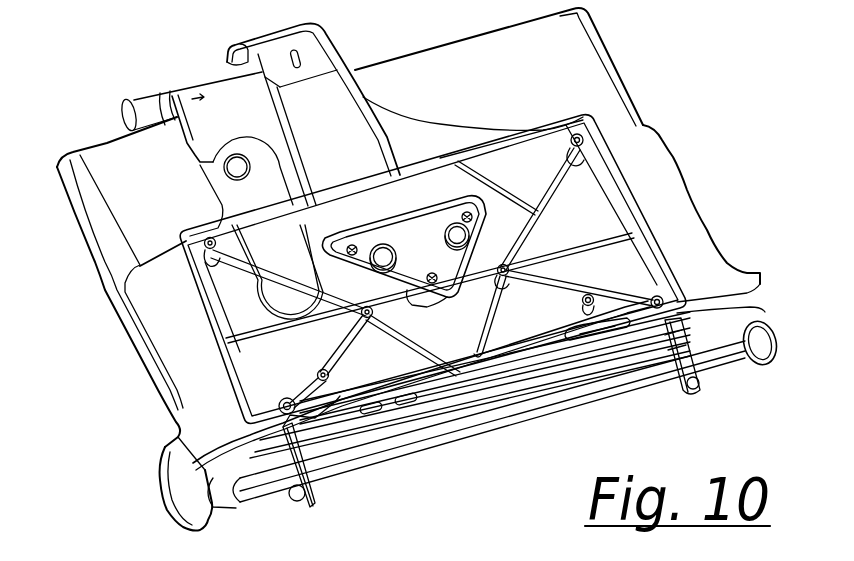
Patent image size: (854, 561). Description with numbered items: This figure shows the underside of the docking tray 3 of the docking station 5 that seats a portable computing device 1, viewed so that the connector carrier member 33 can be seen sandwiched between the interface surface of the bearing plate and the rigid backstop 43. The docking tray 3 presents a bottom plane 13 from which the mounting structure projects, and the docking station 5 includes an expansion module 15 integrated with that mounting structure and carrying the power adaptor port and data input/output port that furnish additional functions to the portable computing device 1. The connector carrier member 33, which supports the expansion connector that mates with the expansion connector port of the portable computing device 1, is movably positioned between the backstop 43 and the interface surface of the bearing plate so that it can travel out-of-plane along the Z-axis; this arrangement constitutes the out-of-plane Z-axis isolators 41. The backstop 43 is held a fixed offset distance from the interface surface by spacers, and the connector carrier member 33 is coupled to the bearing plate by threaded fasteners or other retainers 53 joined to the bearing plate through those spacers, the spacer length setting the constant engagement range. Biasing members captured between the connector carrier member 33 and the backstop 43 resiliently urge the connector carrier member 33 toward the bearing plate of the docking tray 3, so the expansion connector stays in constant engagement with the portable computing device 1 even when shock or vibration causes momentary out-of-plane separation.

The portable computing device 1 is at (607, 64).
The docking tray 3 is at (157, 345).
The docking station 5 is at (227, 62).
The bottom plane 13 is at (584, 241).
The expansion module 15 is at (518, 320).
The connector carrier member 33 is at (490, 252).
The out-of-plane Z-axis isolators 41 is at (452, 232).
The rigid backstop 43 is at (432, 250).
The retainers 53 is at (467, 212).